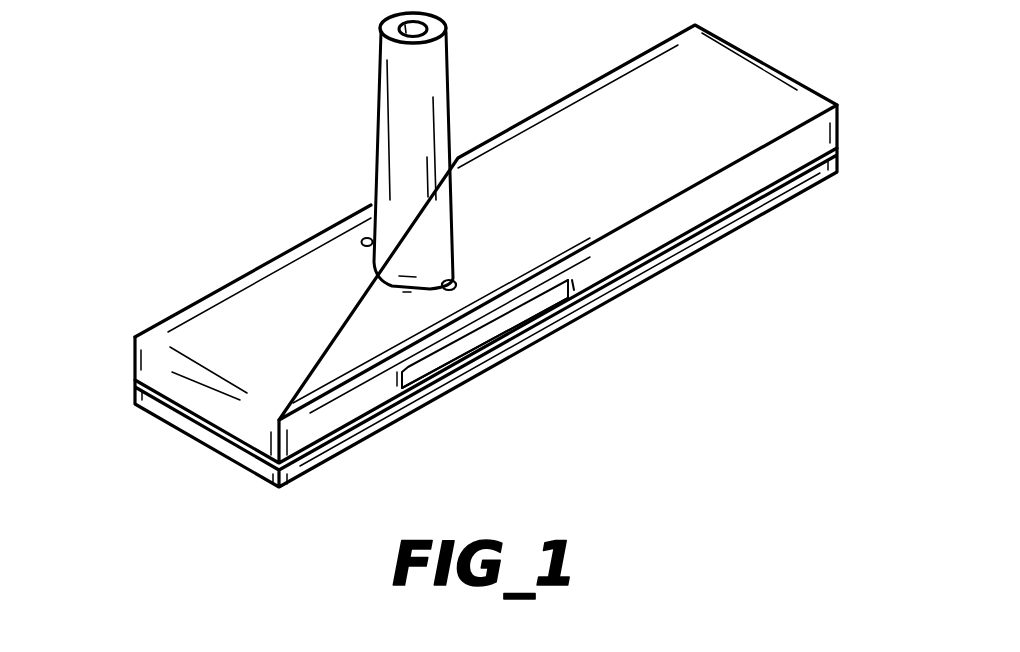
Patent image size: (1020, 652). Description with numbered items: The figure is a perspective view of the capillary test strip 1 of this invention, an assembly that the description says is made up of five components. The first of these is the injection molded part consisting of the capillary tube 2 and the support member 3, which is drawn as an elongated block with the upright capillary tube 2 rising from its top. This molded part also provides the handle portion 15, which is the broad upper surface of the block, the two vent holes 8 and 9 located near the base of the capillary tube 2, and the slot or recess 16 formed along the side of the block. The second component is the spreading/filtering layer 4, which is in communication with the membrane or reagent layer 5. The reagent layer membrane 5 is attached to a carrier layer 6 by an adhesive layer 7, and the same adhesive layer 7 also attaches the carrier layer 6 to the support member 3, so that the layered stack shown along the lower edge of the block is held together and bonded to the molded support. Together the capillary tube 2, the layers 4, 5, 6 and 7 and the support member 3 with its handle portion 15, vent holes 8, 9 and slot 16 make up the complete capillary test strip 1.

The capillary test strip 1 is at (483, 248).
The capillary tube 2 is at (397, 121).
The support member 3 is at (622, 192).
The spreading/filtering layer 4 is at (442, 357).
The reagent layer membrane 5 is at (546, 307).
The carrier layer 6 is at (232, 452).
The adhesive layer 7 is at (840, 152).
The vent hole 8 is at (362, 243).
The vent hole 9 is at (454, 281).
The handle portion 15 is at (707, 97).
The slot or recess 16 is at (583, 281).